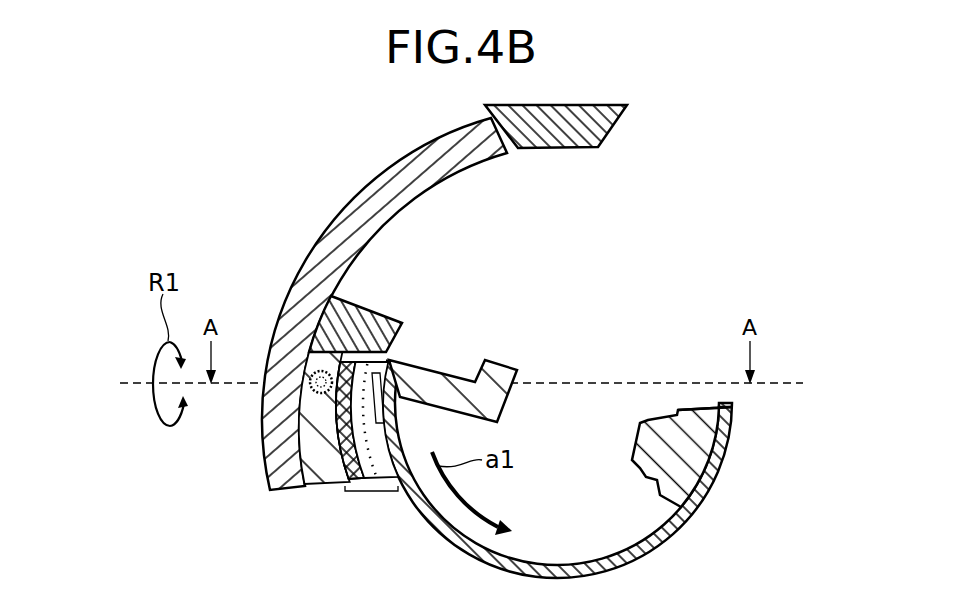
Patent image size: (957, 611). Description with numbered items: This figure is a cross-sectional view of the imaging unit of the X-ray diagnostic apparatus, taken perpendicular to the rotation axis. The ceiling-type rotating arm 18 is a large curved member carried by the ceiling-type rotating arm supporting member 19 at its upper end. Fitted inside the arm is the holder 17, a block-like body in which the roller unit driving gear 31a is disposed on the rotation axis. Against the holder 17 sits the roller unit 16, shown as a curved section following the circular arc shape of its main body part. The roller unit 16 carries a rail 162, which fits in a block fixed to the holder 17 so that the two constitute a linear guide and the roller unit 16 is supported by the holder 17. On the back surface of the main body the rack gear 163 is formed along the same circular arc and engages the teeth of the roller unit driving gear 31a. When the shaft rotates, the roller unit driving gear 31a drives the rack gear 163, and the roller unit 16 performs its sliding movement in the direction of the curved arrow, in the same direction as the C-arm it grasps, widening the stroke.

The roller unit 16 is at (380, 492).
The holder 17 is at (366, 312).
The ceiling-type rotating arm 18 is at (360, 197).
The ceiling-type rotating arm supporting member 19 is at (615, 127).
The roller unit driving gear 31a is at (316, 393).
The rail 162 is at (386, 354).
The rack gear 163 is at (312, 484).